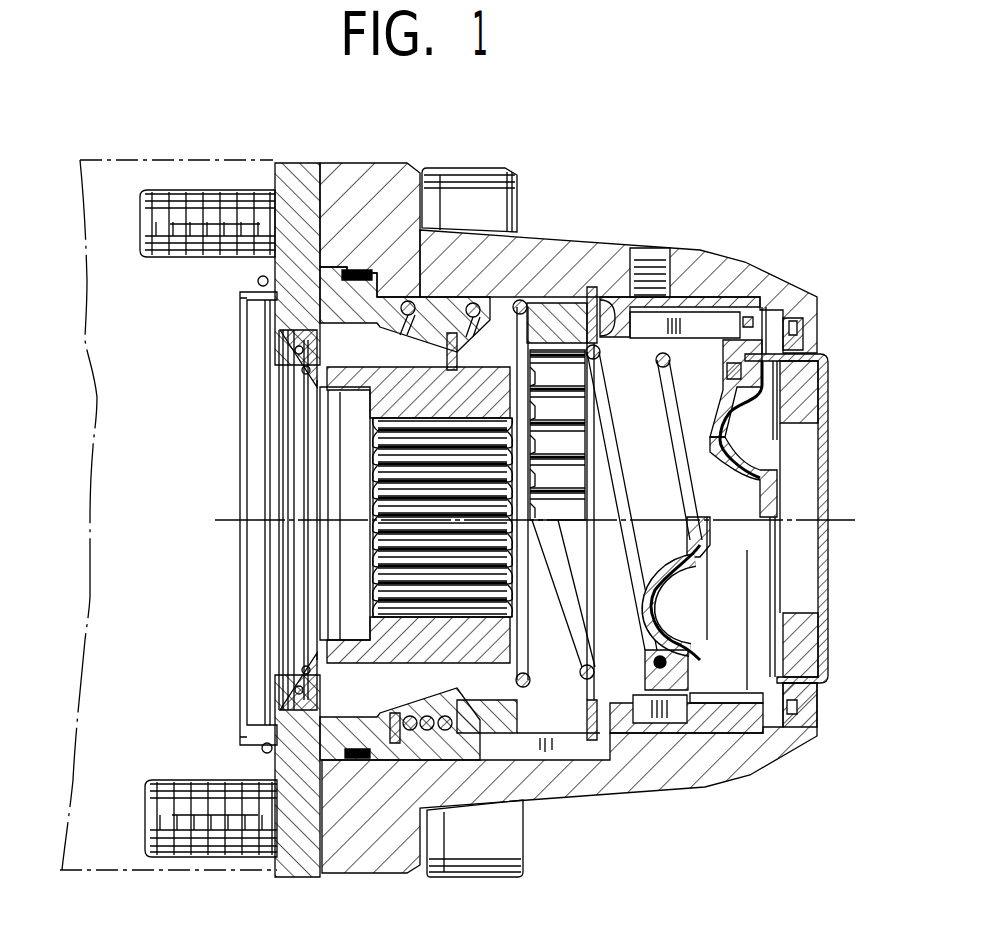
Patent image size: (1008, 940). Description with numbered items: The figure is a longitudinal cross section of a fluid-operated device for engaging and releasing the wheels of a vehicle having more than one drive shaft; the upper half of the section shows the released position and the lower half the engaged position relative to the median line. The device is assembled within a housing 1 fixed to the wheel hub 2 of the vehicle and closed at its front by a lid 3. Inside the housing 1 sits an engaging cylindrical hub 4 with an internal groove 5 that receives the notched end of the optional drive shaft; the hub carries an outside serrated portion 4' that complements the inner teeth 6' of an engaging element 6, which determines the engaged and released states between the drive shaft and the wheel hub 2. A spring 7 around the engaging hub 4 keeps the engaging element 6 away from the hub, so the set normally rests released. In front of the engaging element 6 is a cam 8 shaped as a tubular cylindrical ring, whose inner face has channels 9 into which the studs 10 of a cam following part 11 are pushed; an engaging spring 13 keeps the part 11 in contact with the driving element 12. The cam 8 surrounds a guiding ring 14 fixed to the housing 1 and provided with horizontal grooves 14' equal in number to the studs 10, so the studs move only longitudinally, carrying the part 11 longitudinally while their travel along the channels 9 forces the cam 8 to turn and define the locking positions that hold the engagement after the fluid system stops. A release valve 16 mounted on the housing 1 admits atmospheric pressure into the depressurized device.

The housing 1 is at (360, 163).
The wheel hub 2 is at (172, 160).
The lid 3 is at (830, 578).
The engaging cylindrical hub 4 is at (351, 520).
The outside serrated portion 4' is at (484, 509).
The internal groove 5 is at (343, 518).
The engaging element 6 is at (522, 461).
The inner teeth 6' is at (590, 435).
The spring 7 is at (520, 305).
The cam 8 is at (713, 300).
The channels 9 is at (707, 320).
The studs 10 is at (765, 305).
The cam following part 11 is at (712, 476).
The driving element 12 is at (780, 463).
The engaging spring 13 is at (617, 493).
The guiding ring 14 is at (644, 669).
The horizontal grooves 14' is at (726, 656).
The release valve 16 is at (648, 257).